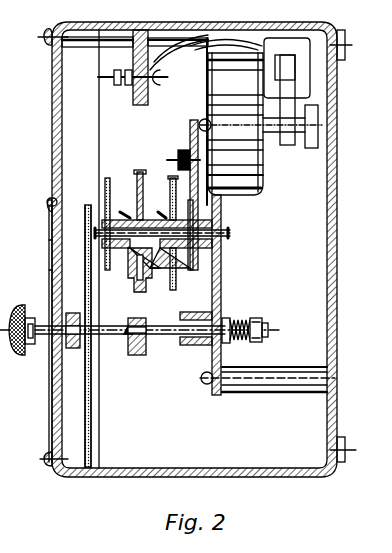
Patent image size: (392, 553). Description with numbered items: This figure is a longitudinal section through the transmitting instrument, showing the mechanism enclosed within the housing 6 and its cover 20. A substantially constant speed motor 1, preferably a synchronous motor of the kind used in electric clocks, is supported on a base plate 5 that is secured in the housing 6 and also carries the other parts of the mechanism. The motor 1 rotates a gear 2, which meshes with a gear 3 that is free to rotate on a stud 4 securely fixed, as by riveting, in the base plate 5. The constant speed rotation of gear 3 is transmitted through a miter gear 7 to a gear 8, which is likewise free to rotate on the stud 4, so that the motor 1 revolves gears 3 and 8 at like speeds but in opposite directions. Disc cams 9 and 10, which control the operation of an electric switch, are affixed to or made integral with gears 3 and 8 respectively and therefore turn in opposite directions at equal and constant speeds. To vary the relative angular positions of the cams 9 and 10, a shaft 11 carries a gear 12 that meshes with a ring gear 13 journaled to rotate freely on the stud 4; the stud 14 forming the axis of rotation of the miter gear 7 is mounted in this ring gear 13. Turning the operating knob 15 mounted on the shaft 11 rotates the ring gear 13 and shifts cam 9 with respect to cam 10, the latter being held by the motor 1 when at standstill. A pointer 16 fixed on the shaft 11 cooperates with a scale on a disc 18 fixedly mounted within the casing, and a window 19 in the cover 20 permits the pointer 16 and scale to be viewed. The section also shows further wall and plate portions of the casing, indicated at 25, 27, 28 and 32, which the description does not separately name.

The constant speed motor 1 is at (265, 166).
The gear 2 is at (188, 127).
The gear 3 is at (218, 285).
The stud 4 is at (221, 226).
The base plate 5 is at (222, 262).
The housing 6 is at (334, 265).
The miter gear 7 is at (163, 260).
The gear 8 is at (124, 215).
The disc cam 9 is at (105, 180).
The disc cam 10 is at (170, 192).
The shaft 11 is at (115, 338).
The gear 12 is at (146, 352).
The ring gear 13 is at (137, 278).
The stud 14 is at (136, 268).
The operating knob 15 is at (20, 345).
The pointer 16 is at (80, 378).
The disc 18 is at (92, 430).
The window 19 is at (60, 418).
The cover 20 is at (52, 105).
The plate tab 25 is at (46, 204).
The plate 27 is at (48, 230).
The plate 28 is at (48, 250).
The plate 32 is at (48, 270).